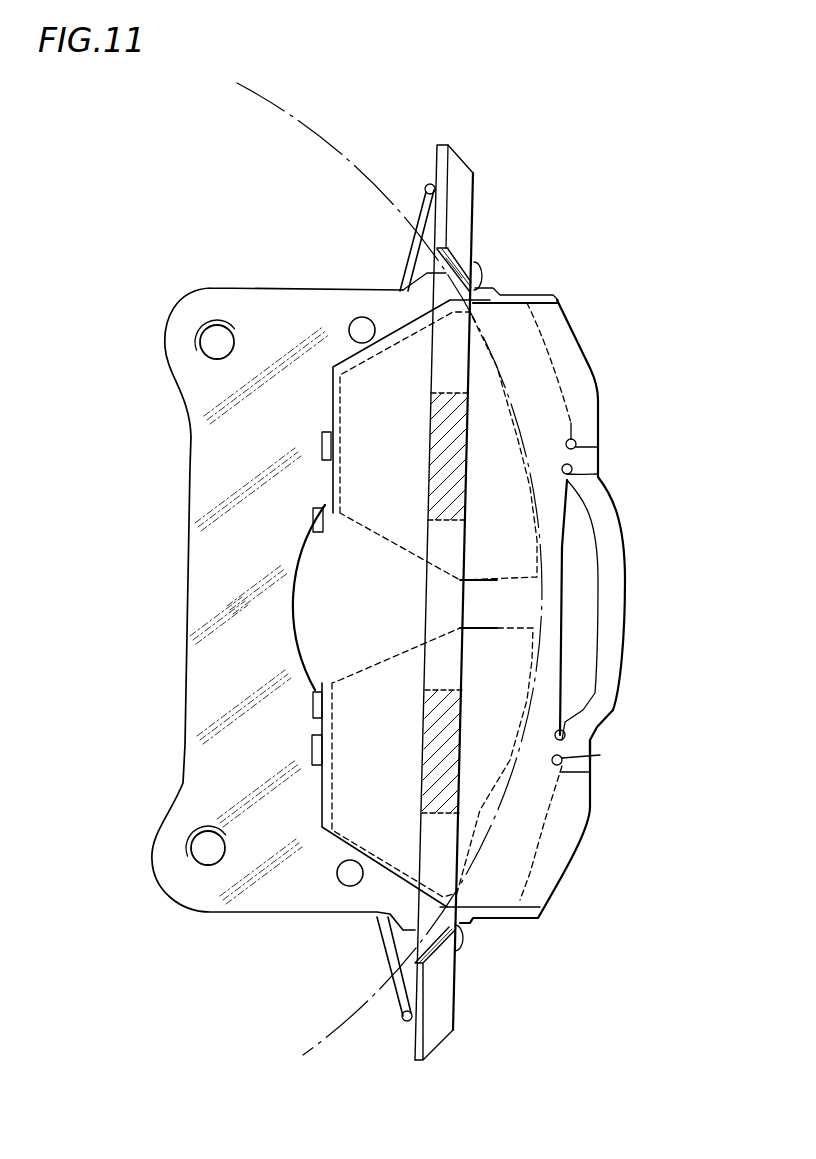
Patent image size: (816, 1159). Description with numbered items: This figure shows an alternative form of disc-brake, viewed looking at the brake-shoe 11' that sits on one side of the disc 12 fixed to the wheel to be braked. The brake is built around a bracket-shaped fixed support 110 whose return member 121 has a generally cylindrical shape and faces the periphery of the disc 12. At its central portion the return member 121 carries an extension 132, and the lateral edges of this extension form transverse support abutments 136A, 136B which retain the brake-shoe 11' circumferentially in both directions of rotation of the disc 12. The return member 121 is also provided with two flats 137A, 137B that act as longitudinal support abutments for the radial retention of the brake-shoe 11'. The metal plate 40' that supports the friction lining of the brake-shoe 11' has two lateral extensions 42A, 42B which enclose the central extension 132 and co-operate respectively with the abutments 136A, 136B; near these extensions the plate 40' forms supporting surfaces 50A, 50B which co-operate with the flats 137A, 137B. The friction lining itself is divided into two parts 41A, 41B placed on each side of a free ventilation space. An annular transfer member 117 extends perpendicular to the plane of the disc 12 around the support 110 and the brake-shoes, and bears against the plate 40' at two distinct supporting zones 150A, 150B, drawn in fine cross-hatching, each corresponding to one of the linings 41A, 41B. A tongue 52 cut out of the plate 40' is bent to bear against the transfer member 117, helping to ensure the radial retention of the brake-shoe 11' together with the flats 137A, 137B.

The brake-shoe 11' is at (340, 598).
The disc 12 is at (338, 1040).
The metal plate 40' is at (528, 592).
The friction lining part 41A is at (330, 540).
The friction lining part 41B is at (320, 728).
The lateral extension 42A is at (580, 373).
The lateral extension 42B is at (558, 865).
The supporting surface 50A is at (570, 440).
The supporting surface 50B is at (558, 732).
The tongue 52 is at (498, 617).
The fixed support 110 is at (170, 899).
The annular transfer member 117 is at (403, 1060).
The return member 121 is at (640, 643).
The extension 132 is at (627, 580).
The transverse support abutment 136A is at (586, 445).
The transverse support abutment 136B is at (577, 775).
The flat 137A is at (598, 474).
The flat 137B is at (565, 757).
The supporting zone 150A is at (431, 395).
The supporting zone 150B is at (440, 805).